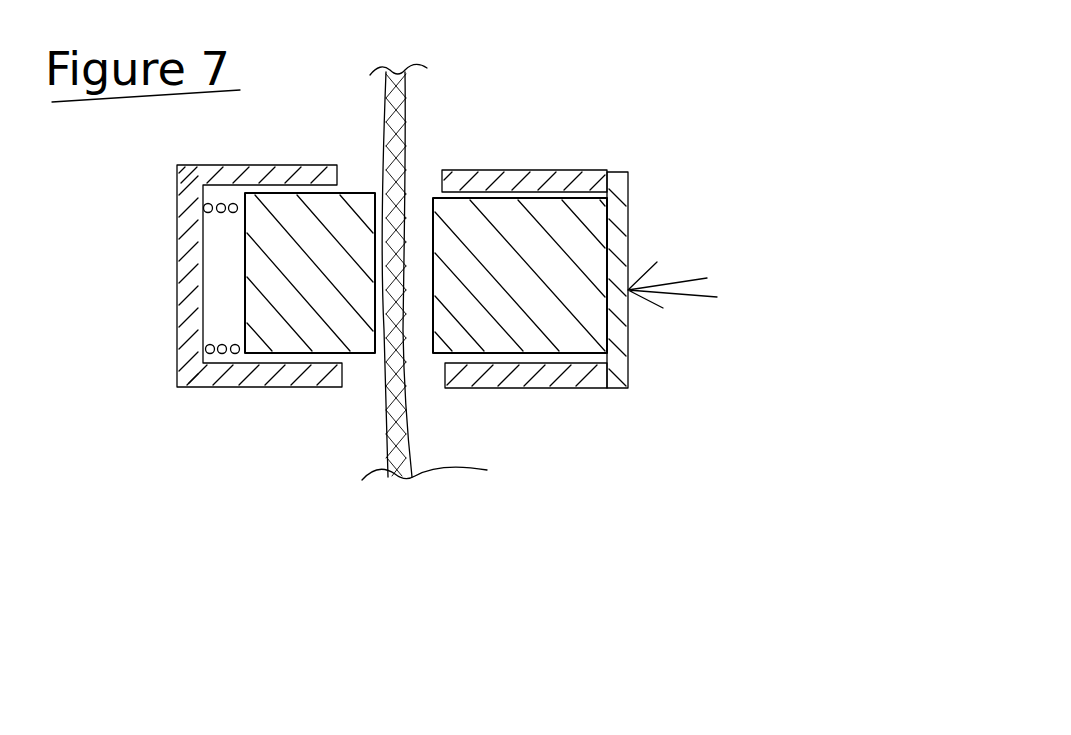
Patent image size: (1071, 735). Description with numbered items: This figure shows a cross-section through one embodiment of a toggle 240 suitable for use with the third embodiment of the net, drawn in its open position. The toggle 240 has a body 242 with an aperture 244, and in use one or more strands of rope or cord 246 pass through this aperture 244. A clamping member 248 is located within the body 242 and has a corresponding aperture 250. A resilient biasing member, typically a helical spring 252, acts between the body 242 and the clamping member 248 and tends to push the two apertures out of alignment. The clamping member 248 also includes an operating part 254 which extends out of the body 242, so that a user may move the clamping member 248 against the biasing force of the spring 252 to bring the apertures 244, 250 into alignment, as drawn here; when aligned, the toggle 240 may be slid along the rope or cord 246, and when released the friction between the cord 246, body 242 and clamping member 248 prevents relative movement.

The toggle 240 is at (152, 438).
The body 242 is at (257, 173).
The aperture 244 is at (425, 378).
The rope or cord 246 is at (408, 100).
The clamping member 248 is at (552, 340).
The aperture 250 is at (412, 215).
The helical spring 252 is at (218, 353).
The operating part 254 is at (632, 258).